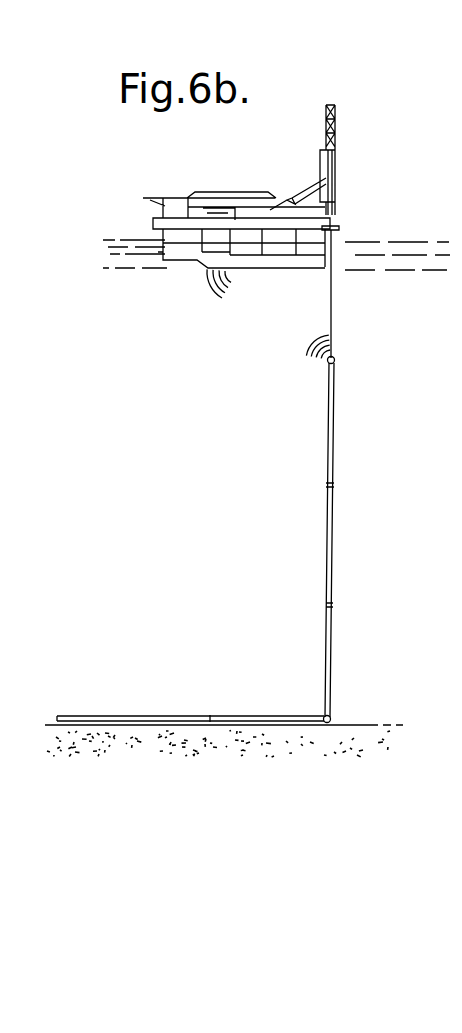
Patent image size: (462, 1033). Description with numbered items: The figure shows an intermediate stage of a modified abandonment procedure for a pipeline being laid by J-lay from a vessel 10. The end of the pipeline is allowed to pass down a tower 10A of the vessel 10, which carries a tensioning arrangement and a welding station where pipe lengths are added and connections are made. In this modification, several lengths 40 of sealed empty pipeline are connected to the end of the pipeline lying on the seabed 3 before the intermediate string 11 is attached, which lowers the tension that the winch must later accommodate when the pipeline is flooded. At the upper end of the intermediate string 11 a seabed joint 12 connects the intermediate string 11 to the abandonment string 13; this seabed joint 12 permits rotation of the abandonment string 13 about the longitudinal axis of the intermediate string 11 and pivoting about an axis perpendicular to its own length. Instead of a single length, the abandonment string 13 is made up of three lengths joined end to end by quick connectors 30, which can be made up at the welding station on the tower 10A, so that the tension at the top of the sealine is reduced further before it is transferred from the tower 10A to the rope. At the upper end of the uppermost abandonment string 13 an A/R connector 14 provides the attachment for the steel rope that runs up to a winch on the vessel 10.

The seabed 3 is at (238, 778).
The vessel 10 is at (238, 190).
The tower 10A is at (336, 157).
The intermediate string 11 is at (263, 716).
The seabed joint 12 is at (333, 718).
The abandonment string 13 is at (335, 437).
The A/R connector 14 is at (336, 360).
The quick connector 30 is at (328, 484).
The lengths of sealed empty pipeline 40 is at (148, 716).